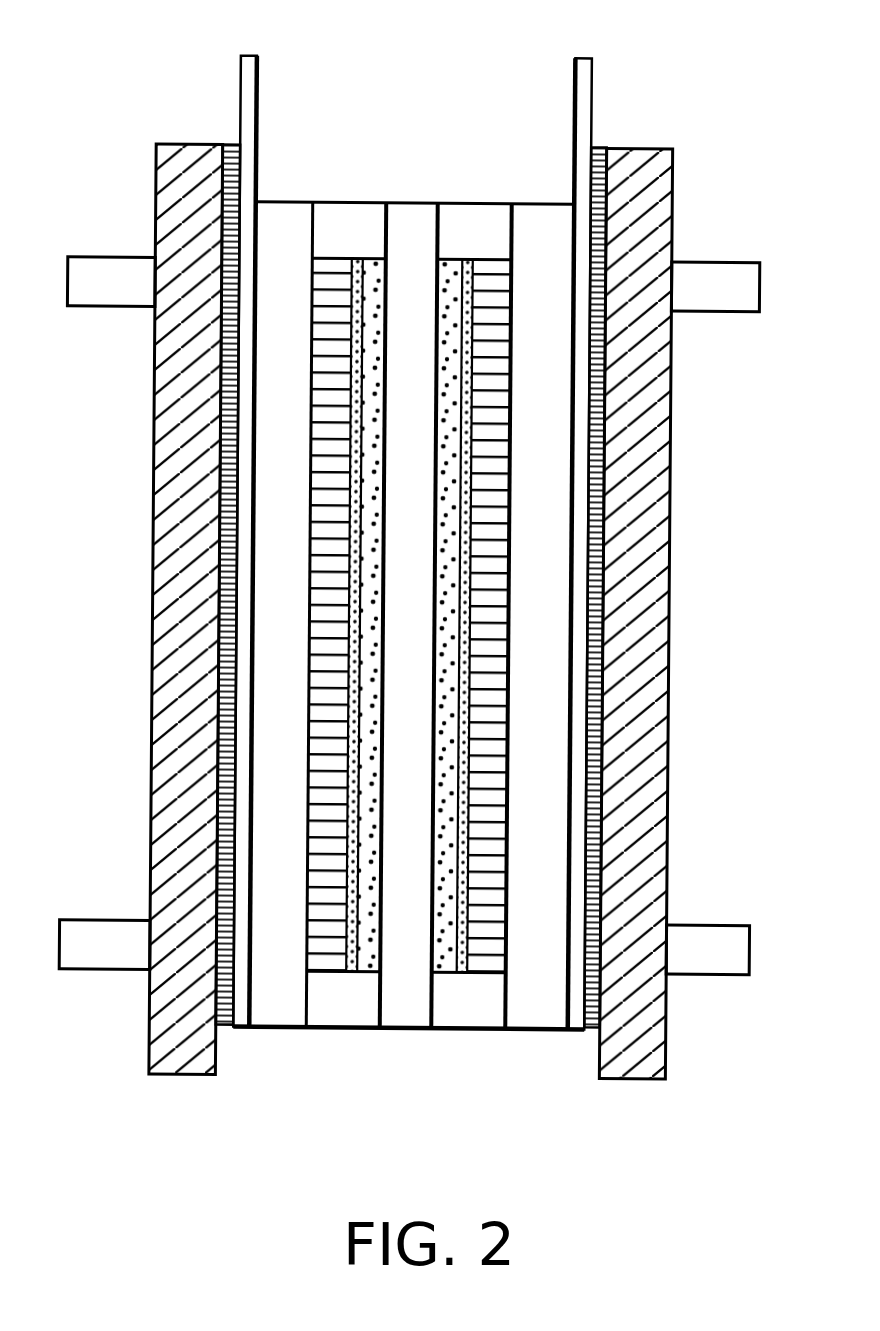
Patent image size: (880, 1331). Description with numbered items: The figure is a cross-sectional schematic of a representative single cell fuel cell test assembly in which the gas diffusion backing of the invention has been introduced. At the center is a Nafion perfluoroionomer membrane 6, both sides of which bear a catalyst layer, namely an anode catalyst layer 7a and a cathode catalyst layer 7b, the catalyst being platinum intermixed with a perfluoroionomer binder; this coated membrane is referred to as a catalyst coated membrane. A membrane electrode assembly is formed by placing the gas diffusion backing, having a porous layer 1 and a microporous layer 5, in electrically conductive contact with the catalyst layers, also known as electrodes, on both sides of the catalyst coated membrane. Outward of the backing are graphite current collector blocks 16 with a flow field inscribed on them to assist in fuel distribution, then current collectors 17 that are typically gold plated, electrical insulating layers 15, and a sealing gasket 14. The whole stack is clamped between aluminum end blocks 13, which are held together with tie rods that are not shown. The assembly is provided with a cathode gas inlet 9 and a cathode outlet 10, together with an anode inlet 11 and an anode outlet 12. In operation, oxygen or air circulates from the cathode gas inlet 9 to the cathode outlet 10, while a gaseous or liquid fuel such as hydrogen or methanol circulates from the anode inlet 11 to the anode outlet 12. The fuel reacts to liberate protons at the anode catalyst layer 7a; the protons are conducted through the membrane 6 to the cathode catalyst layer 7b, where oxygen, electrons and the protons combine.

The porous layer 1 is at (490, 270).
The microporous layer 5 is at (353, 972).
The perfluoroionomer membrane 6 is at (416, 250).
The anode catalyst layer 7a is at (374, 290).
The cathode catalyst layer 7b is at (443, 957).
The cathode gas inlet 9 is at (732, 262).
The cathode outlet 10 is at (716, 925).
The anode inlet 11 is at (83, 259).
The anode outlet 12 is at (83, 922).
The aluminum end block 13 is at (160, 700).
The sealing gasket 14 is at (480, 224).
The electrical insulating layer 15 is at (233, 145).
The graphite current collector block 16 is at (290, 1003).
The current collector 17 is at (256, 56).